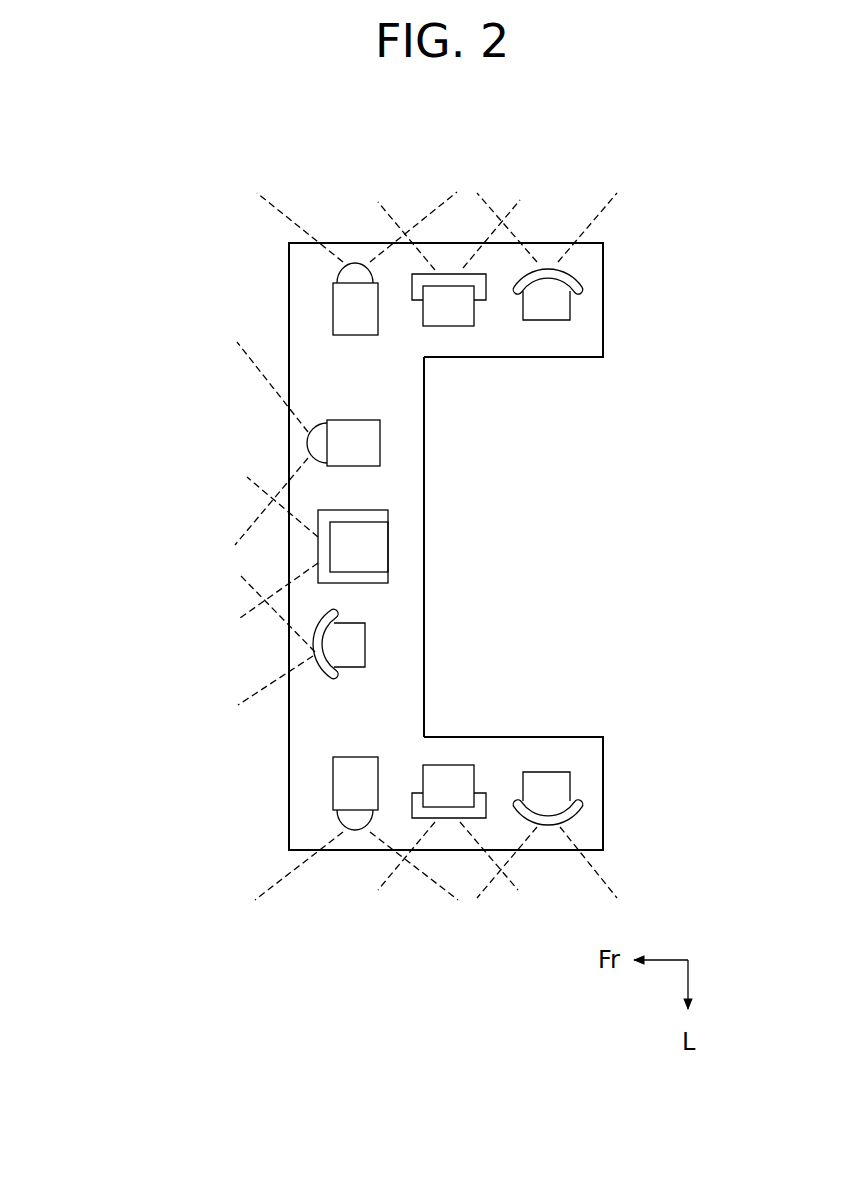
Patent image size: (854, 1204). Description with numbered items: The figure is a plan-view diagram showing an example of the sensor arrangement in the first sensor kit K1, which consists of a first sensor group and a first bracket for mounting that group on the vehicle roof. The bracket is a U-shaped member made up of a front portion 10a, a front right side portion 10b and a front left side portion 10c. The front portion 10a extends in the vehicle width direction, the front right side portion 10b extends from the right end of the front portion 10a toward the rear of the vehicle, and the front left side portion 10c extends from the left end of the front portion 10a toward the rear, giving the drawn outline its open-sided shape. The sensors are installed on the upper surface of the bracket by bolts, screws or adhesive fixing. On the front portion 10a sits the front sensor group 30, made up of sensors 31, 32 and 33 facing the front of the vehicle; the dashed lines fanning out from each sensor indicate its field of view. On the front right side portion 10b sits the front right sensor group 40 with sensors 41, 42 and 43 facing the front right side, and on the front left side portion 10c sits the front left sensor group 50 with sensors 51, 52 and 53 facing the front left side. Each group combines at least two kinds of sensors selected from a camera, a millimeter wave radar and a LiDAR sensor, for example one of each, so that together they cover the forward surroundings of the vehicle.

The first sensor kit K1 is at (652, 221).
The front portion 10a is at (201, 360).
The front right side portion 10b is at (201, 242).
The front left side portion 10c is at (201, 742).
The front sensor group 30 is at (416, 523).
The sensor 31 is at (373, 453).
The sensor 32 is at (370, 547).
The sensor 33 is at (363, 640).
The front right sensor group 40 is at (437, 321).
The sensor 41 is at (547, 300).
The sensor 42 is at (458, 318).
The sensor 43 is at (368, 323).
The front left sensor group 50 is at (436, 772).
The sensor 51 is at (368, 768).
The sensor 52 is at (457, 775).
The sensor 53 is at (547, 793).